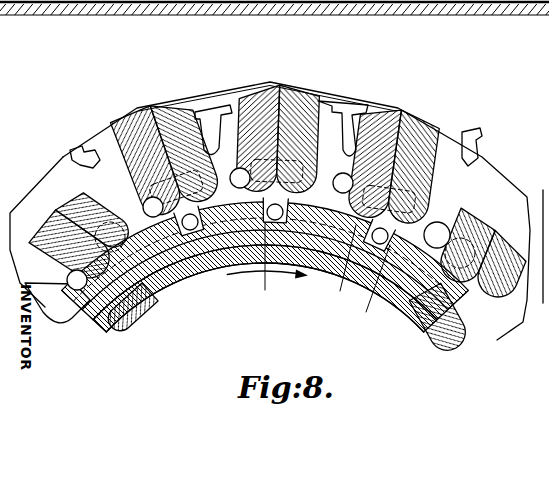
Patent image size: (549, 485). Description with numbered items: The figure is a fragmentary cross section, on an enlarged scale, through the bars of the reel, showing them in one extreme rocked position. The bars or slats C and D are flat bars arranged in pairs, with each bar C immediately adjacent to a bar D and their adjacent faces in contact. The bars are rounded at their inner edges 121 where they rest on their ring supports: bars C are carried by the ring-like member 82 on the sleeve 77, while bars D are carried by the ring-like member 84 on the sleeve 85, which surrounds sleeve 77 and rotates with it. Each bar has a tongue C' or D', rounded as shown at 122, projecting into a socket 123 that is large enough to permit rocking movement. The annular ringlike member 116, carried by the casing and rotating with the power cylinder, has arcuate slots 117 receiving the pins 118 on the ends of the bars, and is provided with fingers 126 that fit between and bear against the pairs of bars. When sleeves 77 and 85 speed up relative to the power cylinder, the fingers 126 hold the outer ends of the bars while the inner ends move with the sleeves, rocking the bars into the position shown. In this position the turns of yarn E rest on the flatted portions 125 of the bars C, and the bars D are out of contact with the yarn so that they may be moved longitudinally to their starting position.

The flatted portion 125 is at (275, 81).
The annular ringlike member 116 is at (36, 192).
The bars or slats C is at (259, 171).
The bars or slats D is at (287, 180).
The fingers 126 is at (88, 158).
The turns of yarn E is at (342, 99).
The rounded portion of tongue 122 is at (188, 286).
The sleeve 85 is at (110, 333).
The rounded inner edge 121 is at (218, 266).
The socket 123 is at (265, 285).
The tongue C' is at (285, 250).
The sleeve 77 is at (347, 269).
The ring-like member 82 is at (375, 289).
The tongue D' is at (287, 321).
The ring-like member 84 is at (103, 308).
The arcuate aperture or slot 117 is at (57, 298).
The pin 118 is at (66, 278).